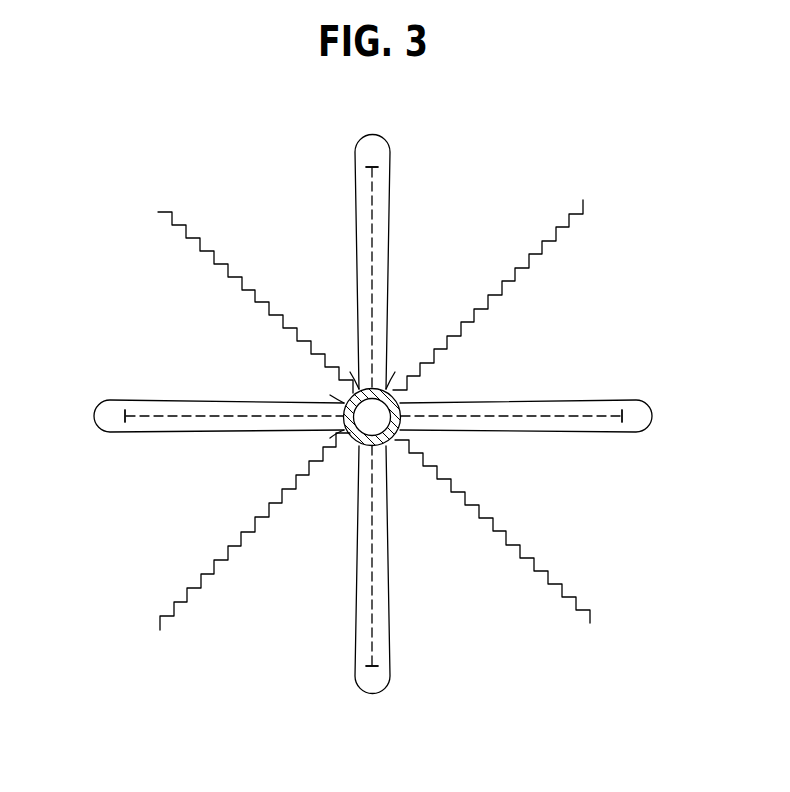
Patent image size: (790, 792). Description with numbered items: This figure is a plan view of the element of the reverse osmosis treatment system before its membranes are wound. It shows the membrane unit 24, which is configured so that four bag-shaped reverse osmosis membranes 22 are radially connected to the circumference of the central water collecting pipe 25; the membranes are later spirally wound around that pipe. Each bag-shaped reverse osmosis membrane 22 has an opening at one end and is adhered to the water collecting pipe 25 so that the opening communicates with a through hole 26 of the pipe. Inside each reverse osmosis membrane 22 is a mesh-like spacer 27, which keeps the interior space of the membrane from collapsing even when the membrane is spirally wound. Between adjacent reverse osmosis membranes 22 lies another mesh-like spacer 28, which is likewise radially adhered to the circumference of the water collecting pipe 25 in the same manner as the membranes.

The reverse osmosis membrane 22 is at (355, 182).
The membrane unit 24 is at (628, 224).
The water collecting pipe 25 is at (388, 390).
The through hole 26 is at (356, 389).
The mesh-like spacer 27 is at (379, 167).
The mesh-like spacer 28 is at (210, 262).